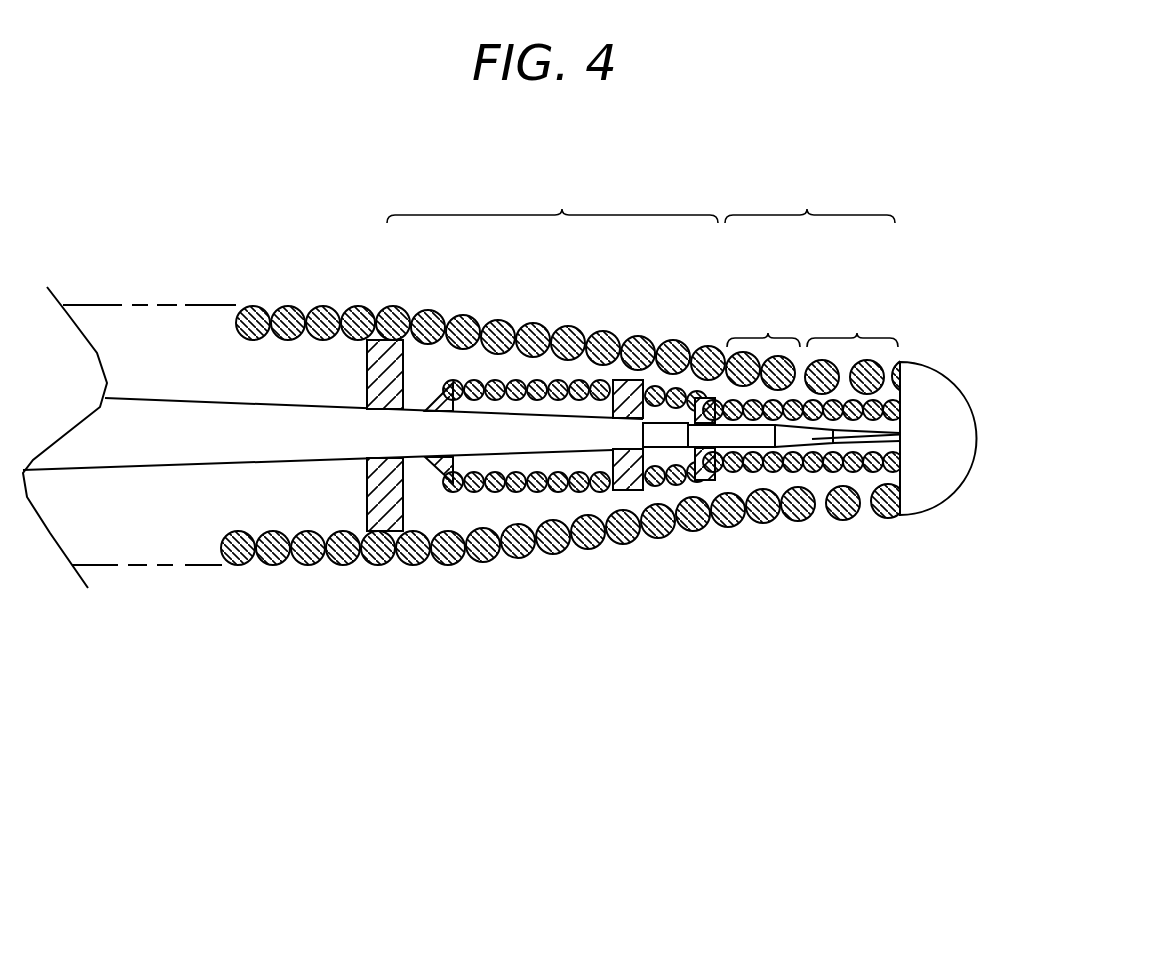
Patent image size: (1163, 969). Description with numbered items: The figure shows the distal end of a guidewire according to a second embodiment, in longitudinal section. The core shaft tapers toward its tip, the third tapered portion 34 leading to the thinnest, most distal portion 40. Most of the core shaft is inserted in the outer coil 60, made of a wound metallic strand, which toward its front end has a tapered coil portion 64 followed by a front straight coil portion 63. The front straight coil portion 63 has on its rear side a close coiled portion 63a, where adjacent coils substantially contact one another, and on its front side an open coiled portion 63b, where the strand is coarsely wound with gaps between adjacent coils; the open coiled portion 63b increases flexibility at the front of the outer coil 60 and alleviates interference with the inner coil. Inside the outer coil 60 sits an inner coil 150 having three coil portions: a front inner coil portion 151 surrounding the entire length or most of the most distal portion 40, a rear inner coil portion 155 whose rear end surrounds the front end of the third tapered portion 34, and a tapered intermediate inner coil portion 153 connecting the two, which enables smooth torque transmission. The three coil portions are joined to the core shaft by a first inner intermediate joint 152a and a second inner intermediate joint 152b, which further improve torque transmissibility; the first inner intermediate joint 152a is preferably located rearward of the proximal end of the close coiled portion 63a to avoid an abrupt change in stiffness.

The third tapered portion 34 is at (453, 433).
The most distal portion 40 is at (900, 434).
The outer coil 60 is at (437, 565).
The front straight coil portion 63 is at (810, 201).
The close coiled portion 63a is at (763, 326).
The open coiled portion 63b is at (852, 326).
The tapered coil portion 64 is at (552, 201).
The inner coil 150 is at (680, 485).
The front inner coil portion 151 is at (855, 473).
The first inner intermediate joint 152a is at (723, 478).
The second inner intermediate joint 152b is at (630, 467).
The intermediate inner coil portion 153 is at (655, 484).
The rear inner coil portion 155 is at (508, 495).